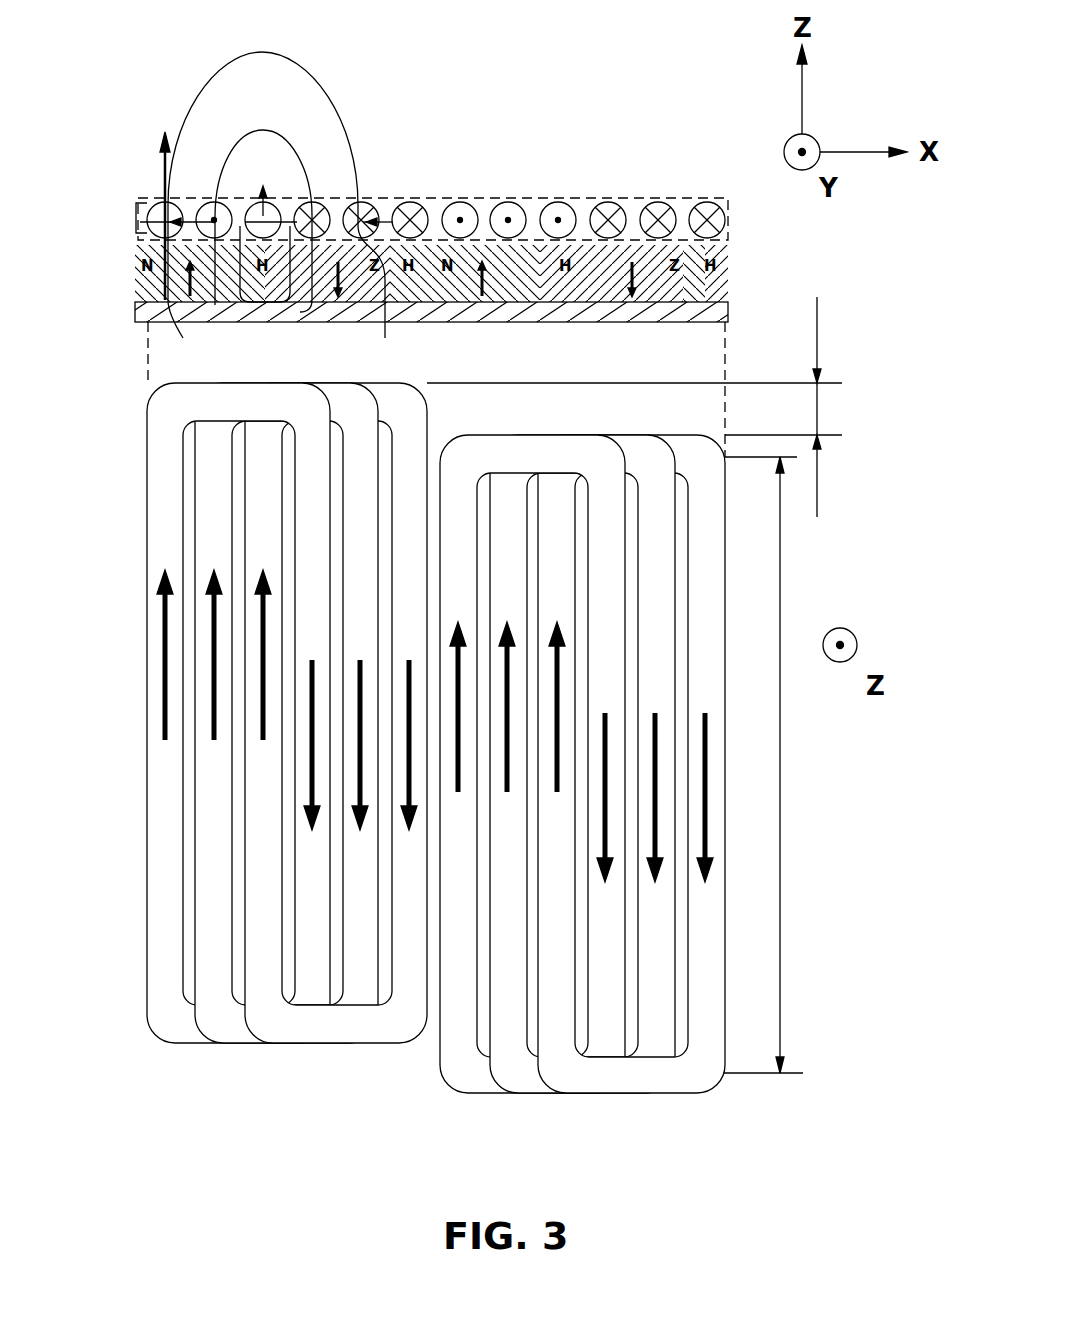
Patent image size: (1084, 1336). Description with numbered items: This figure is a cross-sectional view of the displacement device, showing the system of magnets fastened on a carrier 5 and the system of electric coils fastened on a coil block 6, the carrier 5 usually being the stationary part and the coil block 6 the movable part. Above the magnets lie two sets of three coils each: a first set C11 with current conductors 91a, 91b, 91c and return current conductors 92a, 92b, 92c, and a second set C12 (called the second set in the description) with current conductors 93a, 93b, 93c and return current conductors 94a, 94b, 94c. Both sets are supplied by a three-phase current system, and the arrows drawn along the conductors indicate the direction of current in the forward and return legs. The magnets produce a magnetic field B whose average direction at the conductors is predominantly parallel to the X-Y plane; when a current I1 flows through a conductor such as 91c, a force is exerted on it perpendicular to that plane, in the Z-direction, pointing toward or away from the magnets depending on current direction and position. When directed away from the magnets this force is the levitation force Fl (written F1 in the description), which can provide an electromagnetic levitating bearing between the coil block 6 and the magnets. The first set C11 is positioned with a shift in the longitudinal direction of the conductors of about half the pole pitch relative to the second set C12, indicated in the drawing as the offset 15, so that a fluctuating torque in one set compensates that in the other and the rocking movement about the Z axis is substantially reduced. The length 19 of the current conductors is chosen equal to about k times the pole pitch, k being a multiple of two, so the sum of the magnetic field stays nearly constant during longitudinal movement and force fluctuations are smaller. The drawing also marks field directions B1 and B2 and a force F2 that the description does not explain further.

The carrier 5 is at (729, 313).
The coil block 6 is at (729, 221).
The coil offset distance 15 is at (817, 410).
The length of the current conductors 19 is at (781, 774).
The current conductor 91a is at (136, 207).
The current conductor 91b is at (211, 203).
The current conductor 91c is at (258, 201).
The return current conductor 92a is at (313, 202).
The return current conductor 92b is at (363, 202).
The return current conductor 92c is at (412, 202).
The current conductor 93a is at (532, 764).
The current conductor 93b is at (582, 764).
The current conductor 93c is at (631, 764).
The return current conductor 94a is at (532, 764).
The return current conductor 94b is at (582, 764).
The return current conductor 94c is at (631, 764).
The first set of three coils C11 is at (300, 1112).
The second set of three coils C12 is at (577, 1112).
The magnetic flux B1 is at (160, 150).
The magnetic flux B2 is at (358, 240).
The magnetic field B is at (288, 225).
The levitation force F1 is at (276, 210).
The force F2 is at (381, 299).
The levitation force Fl is at (270, 200).
The current I1 is at (140, 228).